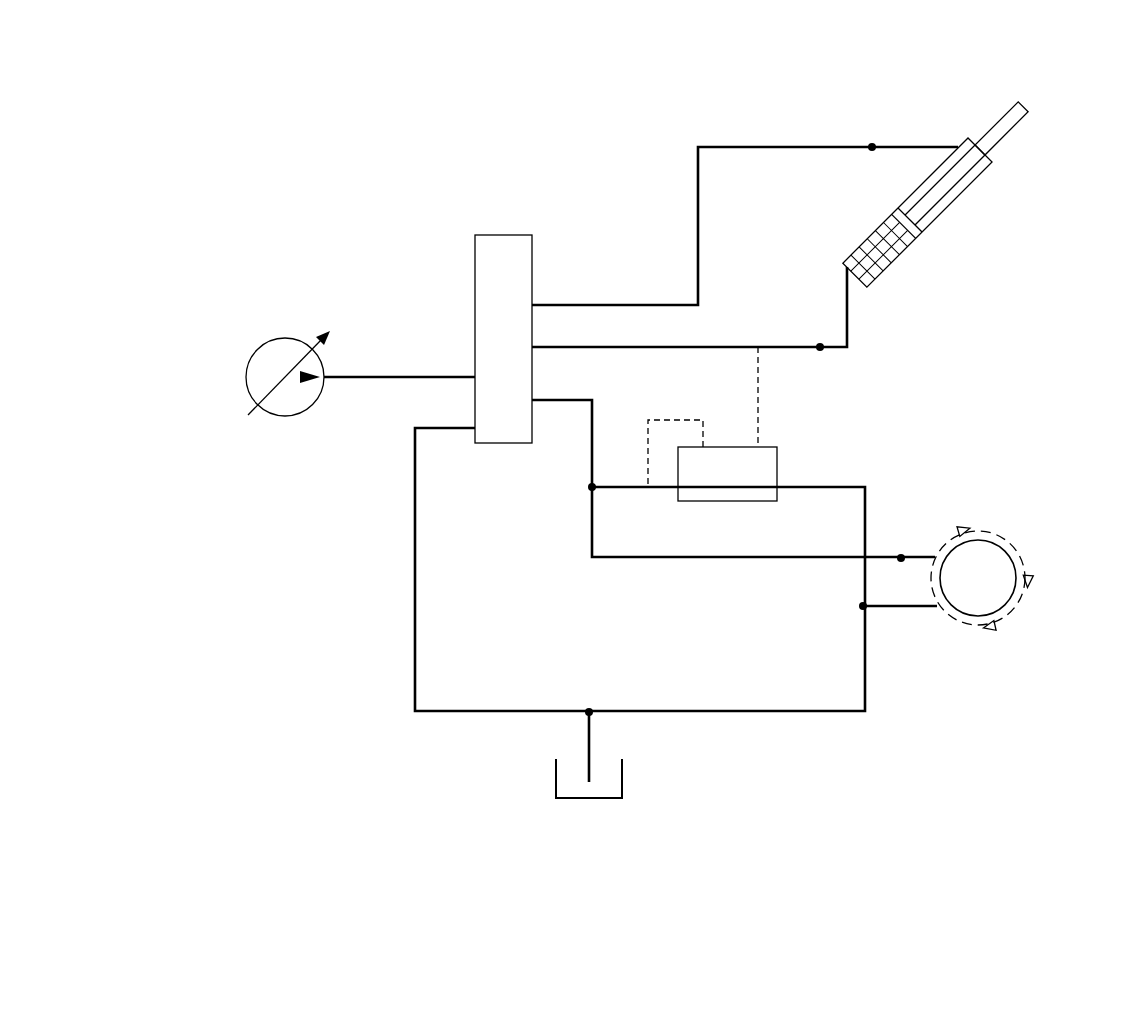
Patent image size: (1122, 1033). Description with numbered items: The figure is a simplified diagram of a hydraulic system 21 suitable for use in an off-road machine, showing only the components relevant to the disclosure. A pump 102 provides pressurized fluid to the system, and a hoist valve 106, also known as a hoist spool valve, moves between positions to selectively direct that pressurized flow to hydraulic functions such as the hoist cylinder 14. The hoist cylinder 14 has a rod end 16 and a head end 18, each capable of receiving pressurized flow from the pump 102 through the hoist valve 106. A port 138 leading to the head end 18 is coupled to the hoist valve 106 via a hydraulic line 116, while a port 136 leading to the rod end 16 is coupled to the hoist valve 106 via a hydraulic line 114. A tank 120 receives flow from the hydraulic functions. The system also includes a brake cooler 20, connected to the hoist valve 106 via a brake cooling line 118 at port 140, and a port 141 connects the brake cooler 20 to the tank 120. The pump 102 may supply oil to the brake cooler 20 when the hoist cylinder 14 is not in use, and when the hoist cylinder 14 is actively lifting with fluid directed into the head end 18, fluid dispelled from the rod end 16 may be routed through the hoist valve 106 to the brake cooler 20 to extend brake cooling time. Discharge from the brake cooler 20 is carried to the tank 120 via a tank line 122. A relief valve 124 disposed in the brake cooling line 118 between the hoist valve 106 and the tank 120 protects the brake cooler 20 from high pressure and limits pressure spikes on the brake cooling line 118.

The hydraulic system 21 is at (598, 58).
The pump 102 is at (245, 370).
The hoist valve 106 is at (475, 318).
The hydraulic line 114 is at (722, 145).
The hydraulic line 116 is at (593, 352).
The brake cooling line 118 is at (722, 560).
The tank 120 is at (625, 783).
The tank line 122 is at (790, 710).
The relief valve 124 is at (738, 503).
The port 136 is at (872, 145).
The port 138 is at (820, 350).
The port 140 is at (903, 555).
The port 141 is at (860, 606).
The hoist cylinder 14 is at (957, 202).
The rod end 16 is at (939, 191).
The head end 18 is at (935, 226).
The brake cooler 20 is at (1060, 569).